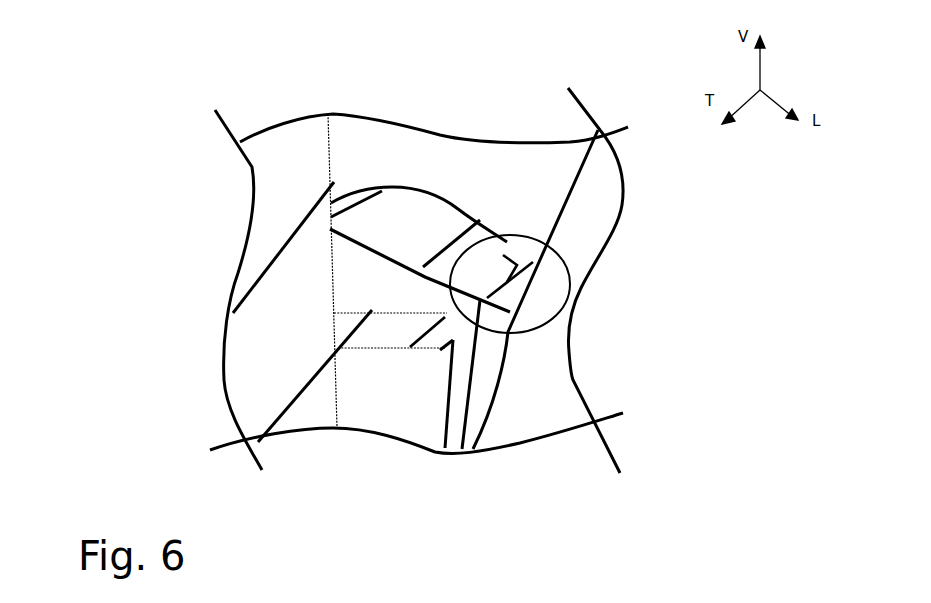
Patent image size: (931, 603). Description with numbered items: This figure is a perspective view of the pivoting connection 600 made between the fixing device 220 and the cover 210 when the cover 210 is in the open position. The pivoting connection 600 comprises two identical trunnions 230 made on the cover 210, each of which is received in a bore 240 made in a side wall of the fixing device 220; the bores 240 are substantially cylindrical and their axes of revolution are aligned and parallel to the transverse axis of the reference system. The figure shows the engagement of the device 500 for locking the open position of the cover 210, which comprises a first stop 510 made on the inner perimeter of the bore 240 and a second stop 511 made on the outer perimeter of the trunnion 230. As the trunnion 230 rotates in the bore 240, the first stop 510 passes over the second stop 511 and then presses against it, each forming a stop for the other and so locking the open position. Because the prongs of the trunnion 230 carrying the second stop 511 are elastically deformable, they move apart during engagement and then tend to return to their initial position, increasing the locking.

The pivoting connection 600 is at (199, 219).
The cover 210 is at (250, 377).
The fixing device 220 is at (547, 167).
The trunnion 230 is at (362, 117).
The bore 240 is at (436, 214).
The device for locking the open position of the cover 500 is at (570, 270).
The first stop 510 is at (530, 285).
The second stop 511 is at (498, 254).